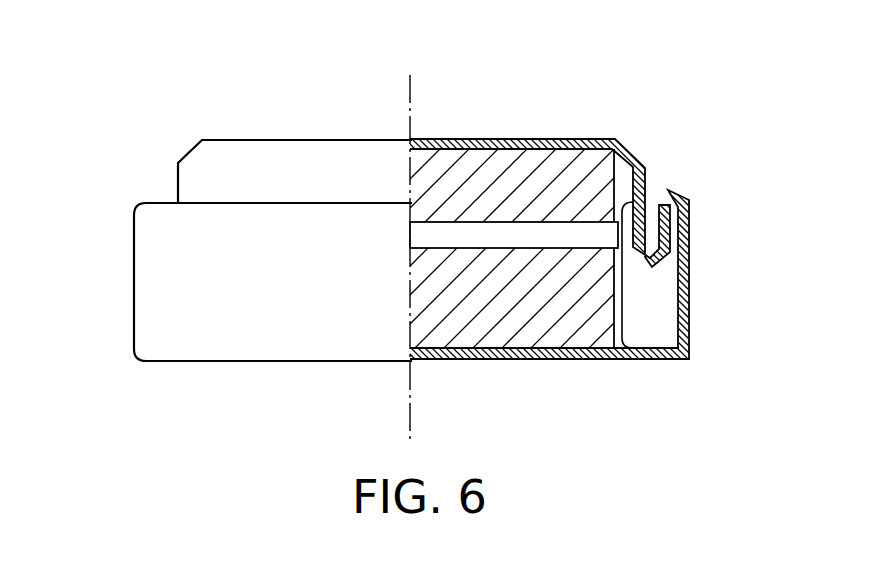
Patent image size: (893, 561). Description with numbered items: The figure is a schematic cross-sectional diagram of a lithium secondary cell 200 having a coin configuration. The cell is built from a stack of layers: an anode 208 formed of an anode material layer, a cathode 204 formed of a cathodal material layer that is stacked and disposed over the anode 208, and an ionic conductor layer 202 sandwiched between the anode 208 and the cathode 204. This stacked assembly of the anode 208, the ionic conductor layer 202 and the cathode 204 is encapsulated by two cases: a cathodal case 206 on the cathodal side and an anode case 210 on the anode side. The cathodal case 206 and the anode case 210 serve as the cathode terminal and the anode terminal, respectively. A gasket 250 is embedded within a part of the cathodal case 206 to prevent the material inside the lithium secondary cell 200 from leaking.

The lithium secondary cell 200 is at (112, 67).
The ionic conductor layer 202 is at (587, 237).
The cathode 204 is at (457, 330).
The cathodal case 206 is at (517, 348).
The anode 208 is at (458, 162).
The anode case 210 is at (518, 139).
The gasket 250 is at (652, 318).